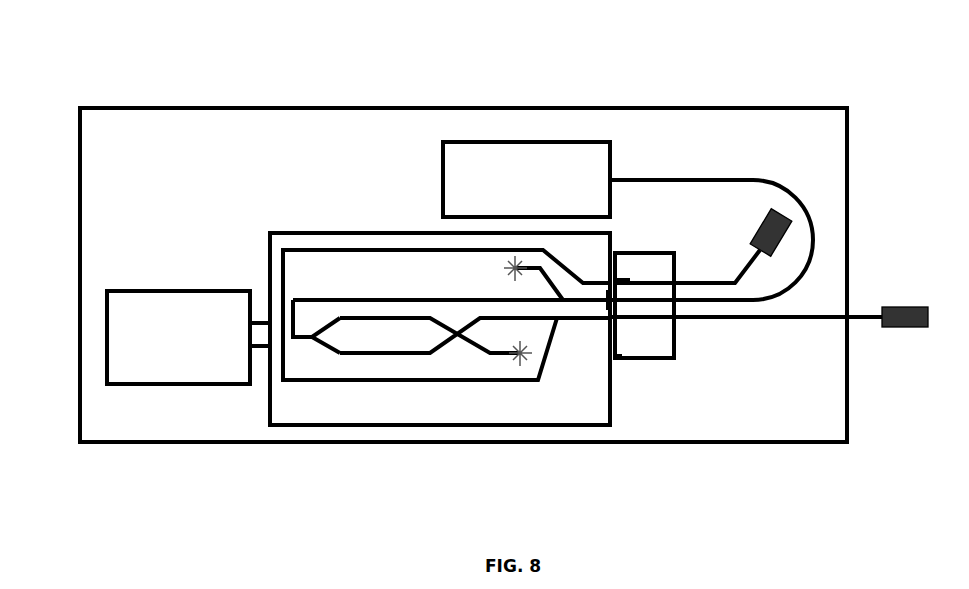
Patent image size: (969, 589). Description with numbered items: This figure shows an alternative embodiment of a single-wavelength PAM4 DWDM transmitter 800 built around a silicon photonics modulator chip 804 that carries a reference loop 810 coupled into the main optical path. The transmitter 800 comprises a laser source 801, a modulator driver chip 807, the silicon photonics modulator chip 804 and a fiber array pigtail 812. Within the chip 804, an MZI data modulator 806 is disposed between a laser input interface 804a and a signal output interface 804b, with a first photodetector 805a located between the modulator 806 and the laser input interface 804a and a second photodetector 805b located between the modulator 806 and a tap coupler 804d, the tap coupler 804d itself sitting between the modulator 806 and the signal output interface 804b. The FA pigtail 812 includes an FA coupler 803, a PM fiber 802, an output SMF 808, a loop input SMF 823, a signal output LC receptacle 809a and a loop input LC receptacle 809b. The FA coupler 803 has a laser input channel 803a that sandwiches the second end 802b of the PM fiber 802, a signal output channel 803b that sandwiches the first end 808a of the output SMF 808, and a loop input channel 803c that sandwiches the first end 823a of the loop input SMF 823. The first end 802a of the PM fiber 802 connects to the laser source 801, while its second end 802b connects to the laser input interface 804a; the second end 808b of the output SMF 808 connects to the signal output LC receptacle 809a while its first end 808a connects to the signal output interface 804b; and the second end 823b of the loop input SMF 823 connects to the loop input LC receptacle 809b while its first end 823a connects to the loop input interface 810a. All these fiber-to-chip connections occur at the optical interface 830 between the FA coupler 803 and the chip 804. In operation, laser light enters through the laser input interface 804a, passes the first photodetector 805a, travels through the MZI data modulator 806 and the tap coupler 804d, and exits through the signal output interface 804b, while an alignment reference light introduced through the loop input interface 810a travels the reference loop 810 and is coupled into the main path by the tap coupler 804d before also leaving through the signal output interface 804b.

The transmitter 800 is at (135, 92).
The laser source 801 is at (457, 142).
The PM fiber 802 is at (752, 181).
The first end of the PM fiber 802a is at (610, 290).
The second end of the PM fiber 802b is at (640, 345).
The FA coupler 803 is at (656, 247).
The laser input channel 803a is at (683, 318).
The signal output channel 803b is at (675, 347).
The loop input channel 803c is at (658, 296).
The silicon photonics modulator chip 804 is at (318, 233).
The laser input interface 804a is at (601, 295).
The signal output interface 804b is at (605, 355).
The tap coupler 804d is at (561, 325).
The first photodetector 805a is at (505, 271).
The second photodetector 805b is at (506, 364).
The MZI data modulator 806 is at (320, 355).
The modulator driver chip 807 is at (152, 291).
The output SMF 808 is at (795, 319).
The first end of the output SMF 808a is at (619, 360).
The second end of the output SMF 808b is at (876, 325).
The signal output LC receptacle 809a is at (905, 307).
The loop input LC receptacle 809b is at (786, 218).
The reference loop 810 is at (280, 277).
The loop input interface 810a is at (605, 293).
The FA pigtail 812 is at (699, 354).
The loop input SMF 823 is at (737, 283).
The first end of the loop input SMF 823a is at (618, 290).
The second end of the loop input SMF 823b is at (762, 255).
The optical interface 830 is at (616, 371).